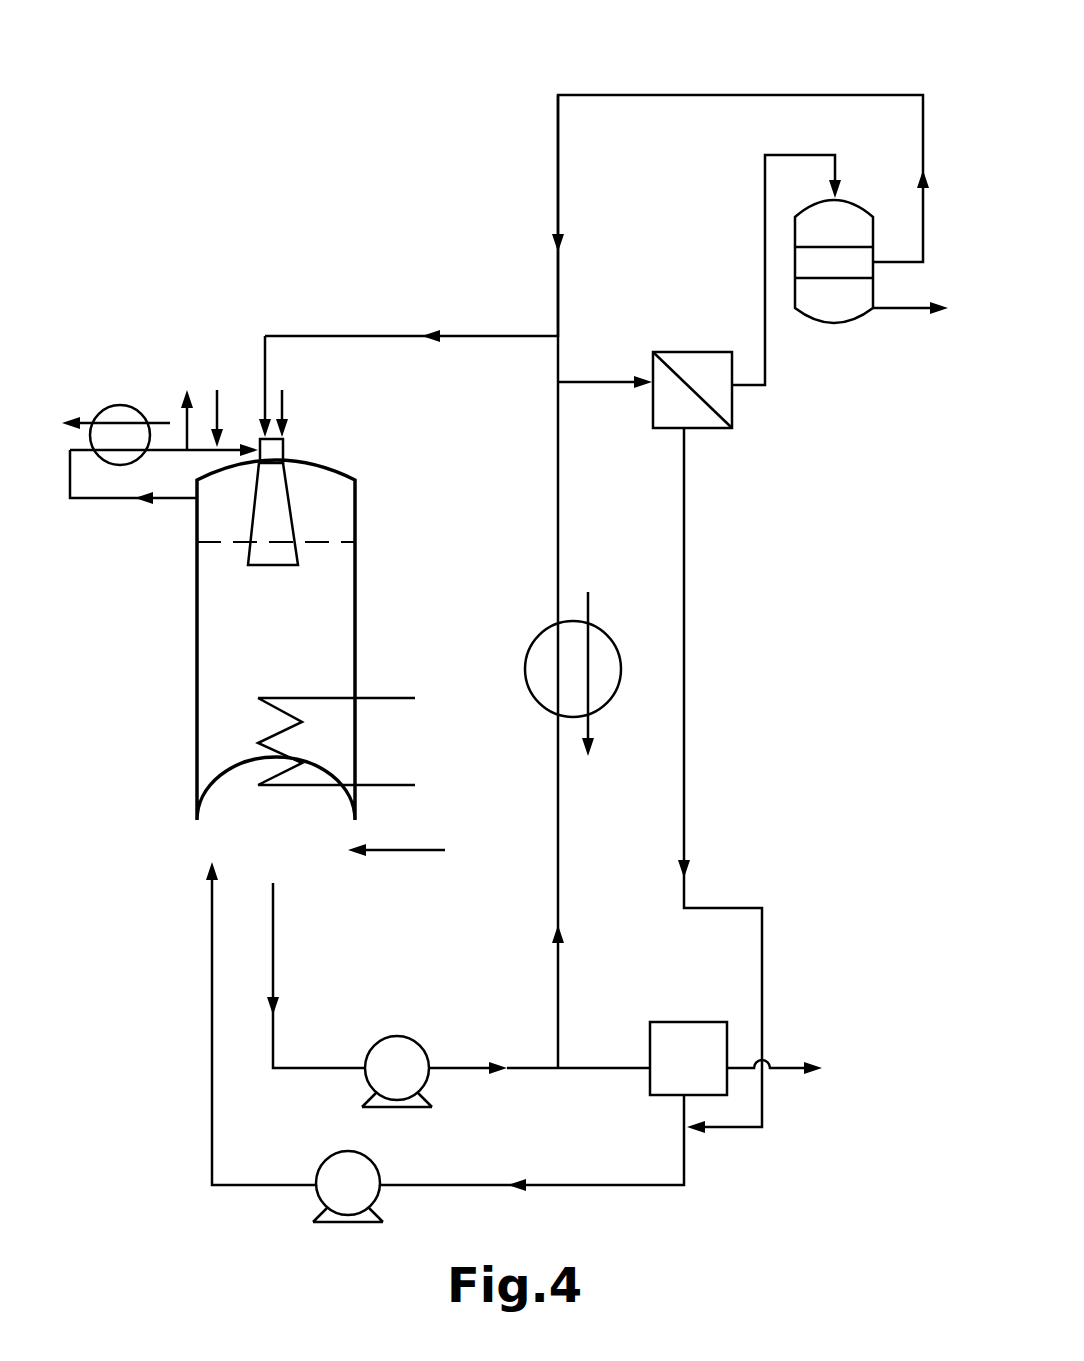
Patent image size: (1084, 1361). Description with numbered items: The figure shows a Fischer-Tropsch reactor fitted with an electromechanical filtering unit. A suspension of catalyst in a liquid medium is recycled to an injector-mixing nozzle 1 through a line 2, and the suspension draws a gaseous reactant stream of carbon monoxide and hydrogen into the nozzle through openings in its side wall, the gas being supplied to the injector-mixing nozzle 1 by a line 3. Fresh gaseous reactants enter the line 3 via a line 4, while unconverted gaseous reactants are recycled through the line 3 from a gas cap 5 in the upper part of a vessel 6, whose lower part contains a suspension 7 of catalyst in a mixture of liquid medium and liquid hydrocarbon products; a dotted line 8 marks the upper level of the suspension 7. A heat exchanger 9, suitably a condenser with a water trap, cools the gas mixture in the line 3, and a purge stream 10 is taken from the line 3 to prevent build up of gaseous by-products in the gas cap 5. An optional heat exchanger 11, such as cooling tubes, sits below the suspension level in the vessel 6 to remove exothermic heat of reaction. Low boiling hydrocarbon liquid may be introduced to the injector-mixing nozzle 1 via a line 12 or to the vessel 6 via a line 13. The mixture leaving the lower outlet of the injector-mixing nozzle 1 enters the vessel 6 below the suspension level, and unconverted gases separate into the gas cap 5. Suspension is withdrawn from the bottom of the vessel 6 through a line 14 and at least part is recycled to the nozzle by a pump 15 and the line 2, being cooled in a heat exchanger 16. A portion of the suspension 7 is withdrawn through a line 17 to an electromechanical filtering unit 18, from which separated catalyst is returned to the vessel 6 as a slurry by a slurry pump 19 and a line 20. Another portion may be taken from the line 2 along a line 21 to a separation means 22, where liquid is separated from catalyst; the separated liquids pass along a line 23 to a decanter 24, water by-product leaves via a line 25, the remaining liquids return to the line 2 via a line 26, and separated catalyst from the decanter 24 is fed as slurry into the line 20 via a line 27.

The injector-mixing nozzle 1 is at (285, 450).
The line 2 is at (560, 463).
The line 3 is at (232, 442).
The line 4 is at (212, 407).
The gas cap 5 is at (322, 512).
The vessel 6 is at (355, 627).
The suspension 7 is at (250, 660).
The dotted line 8 is at (225, 543).
The heat exchanger 9 is at (113, 405).
The purge stream 10 is at (183, 420).
The heat exchanger 11 is at (287, 752).
The line 12 is at (283, 407).
The line 13 is at (413, 852).
The line 14 is at (273, 945).
The pump 15 is at (397, 1050).
The heat exchanger 16 is at (618, 654).
The line 17 is at (593, 1067).
The electromechanical filtering unit 18 is at (687, 1048).
The slurry pump 19 is at (347, 1165).
The line 20 is at (212, 995).
The line 21 is at (602, 382).
The separation means 22 is at (731, 411).
The line 23 is at (762, 267).
The decanter 24 is at (850, 200).
The line 25 is at (907, 308).
The line 26 is at (693, 95).
The line 27 is at (685, 723).